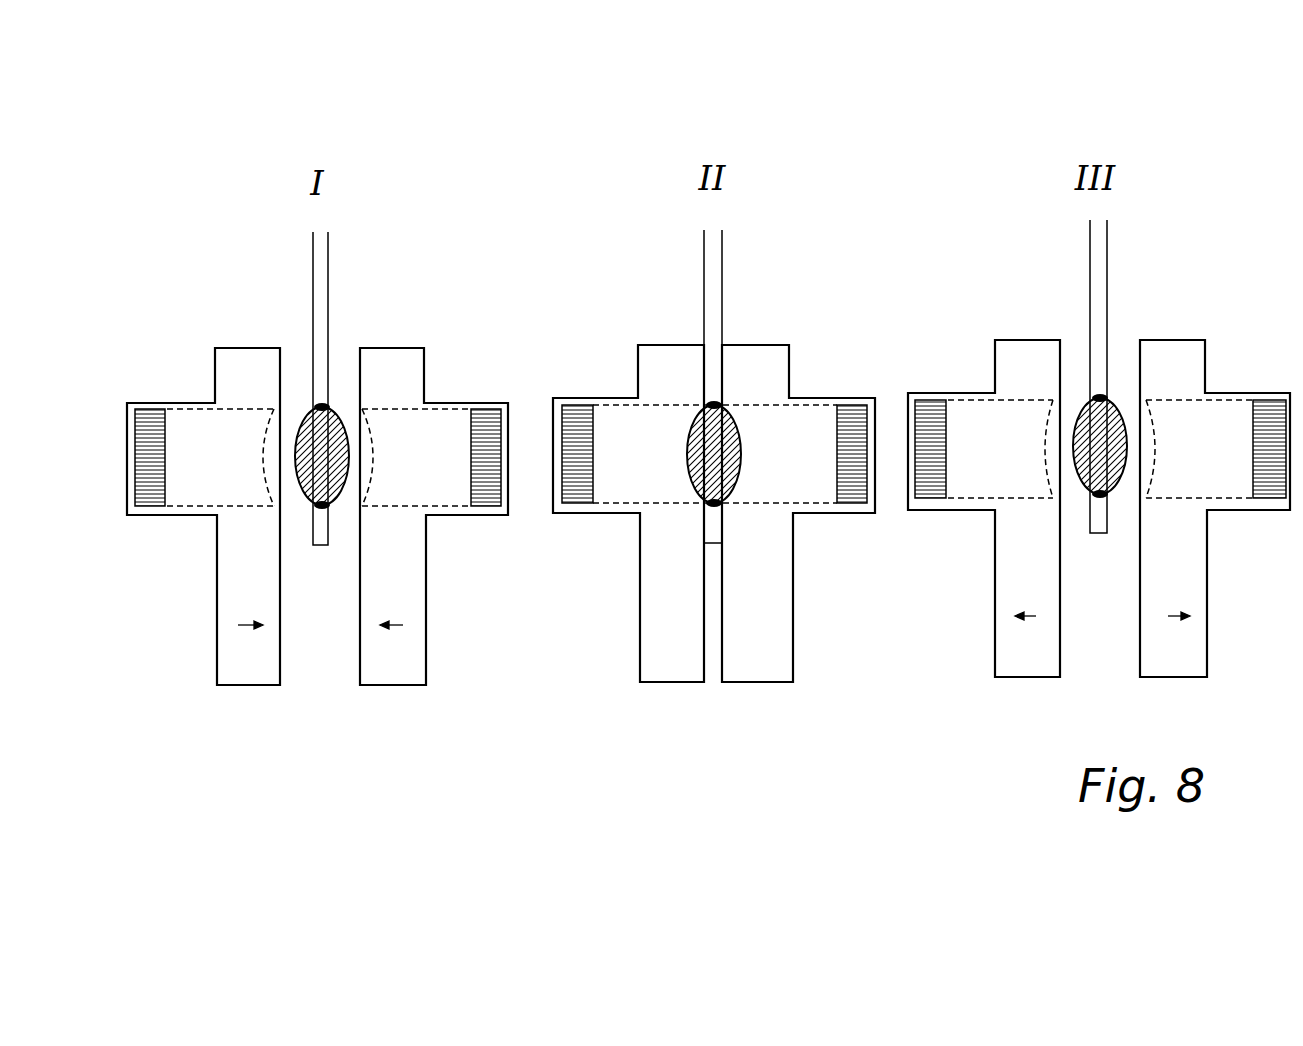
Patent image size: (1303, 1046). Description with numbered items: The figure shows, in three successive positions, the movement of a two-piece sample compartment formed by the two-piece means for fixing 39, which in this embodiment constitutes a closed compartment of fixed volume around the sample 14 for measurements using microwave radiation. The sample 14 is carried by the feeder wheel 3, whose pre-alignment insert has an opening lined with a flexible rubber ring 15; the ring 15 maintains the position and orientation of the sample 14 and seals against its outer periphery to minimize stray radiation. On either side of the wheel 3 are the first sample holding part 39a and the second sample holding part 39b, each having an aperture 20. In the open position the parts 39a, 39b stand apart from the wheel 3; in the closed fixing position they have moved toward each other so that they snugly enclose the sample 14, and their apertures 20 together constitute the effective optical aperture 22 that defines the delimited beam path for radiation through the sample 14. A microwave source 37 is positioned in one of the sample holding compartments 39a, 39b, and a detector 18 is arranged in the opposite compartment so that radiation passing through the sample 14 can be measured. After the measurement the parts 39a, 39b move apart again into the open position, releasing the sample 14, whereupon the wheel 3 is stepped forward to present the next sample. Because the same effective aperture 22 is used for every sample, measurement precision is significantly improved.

The feeder wheel 3 is at (318, 253).
The sample 14 is at (700, 440).
The flexible rubber ring 15 is at (320, 402).
The detector 18 is at (852, 412).
The aperture 20 is at (235, 492).
The effective optical aperture 22 is at (660, 487).
The microwave source 37 is at (577, 427).
The two-piece means for fixing 39 is at (793, 312).
The first sample holding part 39a is at (245, 370).
The second sample holding part 39b is at (385, 363).